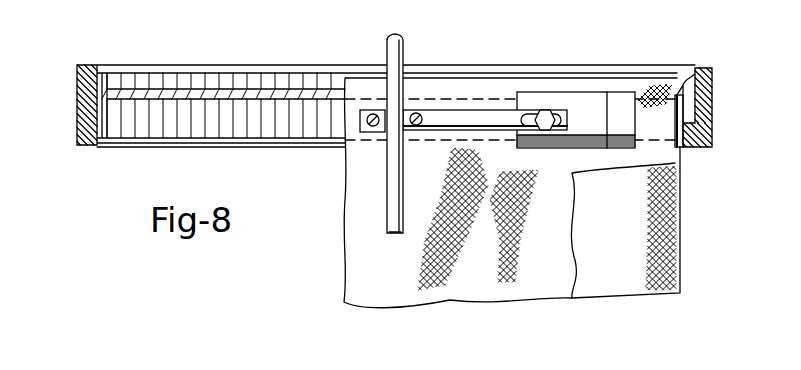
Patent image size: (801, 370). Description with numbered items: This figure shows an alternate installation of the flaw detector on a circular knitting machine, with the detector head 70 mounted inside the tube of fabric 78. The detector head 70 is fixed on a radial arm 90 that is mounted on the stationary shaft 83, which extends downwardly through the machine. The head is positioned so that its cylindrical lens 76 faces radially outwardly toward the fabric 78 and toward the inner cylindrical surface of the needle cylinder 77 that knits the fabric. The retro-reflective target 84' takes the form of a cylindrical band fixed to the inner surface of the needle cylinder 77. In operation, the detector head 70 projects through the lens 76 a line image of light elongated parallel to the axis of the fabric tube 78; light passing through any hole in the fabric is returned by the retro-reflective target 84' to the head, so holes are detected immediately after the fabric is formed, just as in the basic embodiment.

The detector head 70 is at (578, 131).
The cylindrical lens 76 is at (640, 127).
The needle cylinder 77 is at (78, 128).
The tube of fabric 78 is at (678, 216).
The stationary shaft 83 is at (405, 43).
The retro-reflective target 84' is at (723, 107).
The radial arm 90 is at (473, 113).